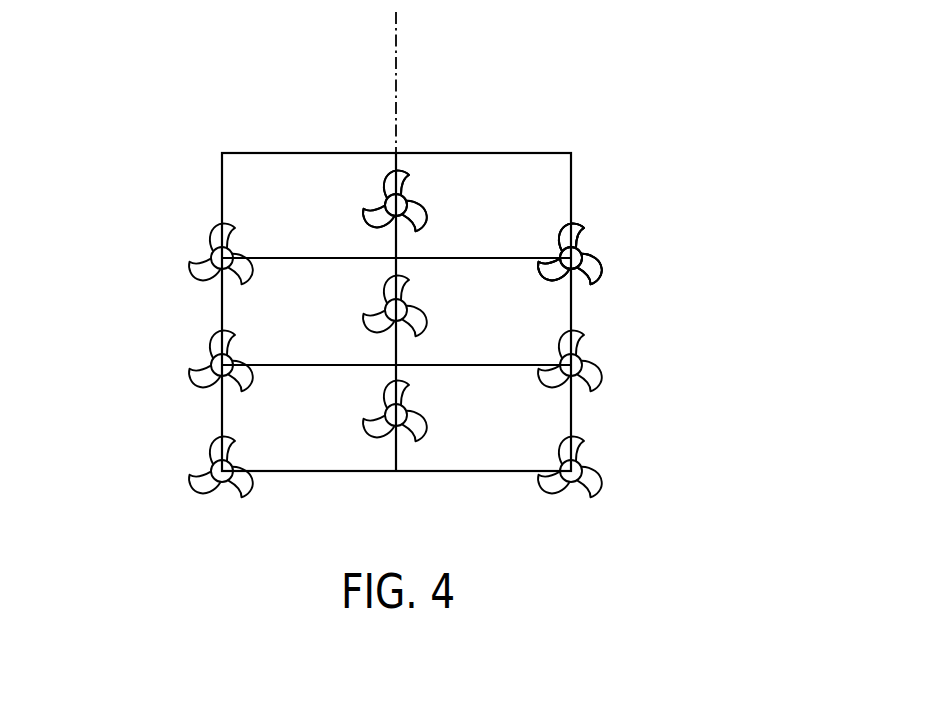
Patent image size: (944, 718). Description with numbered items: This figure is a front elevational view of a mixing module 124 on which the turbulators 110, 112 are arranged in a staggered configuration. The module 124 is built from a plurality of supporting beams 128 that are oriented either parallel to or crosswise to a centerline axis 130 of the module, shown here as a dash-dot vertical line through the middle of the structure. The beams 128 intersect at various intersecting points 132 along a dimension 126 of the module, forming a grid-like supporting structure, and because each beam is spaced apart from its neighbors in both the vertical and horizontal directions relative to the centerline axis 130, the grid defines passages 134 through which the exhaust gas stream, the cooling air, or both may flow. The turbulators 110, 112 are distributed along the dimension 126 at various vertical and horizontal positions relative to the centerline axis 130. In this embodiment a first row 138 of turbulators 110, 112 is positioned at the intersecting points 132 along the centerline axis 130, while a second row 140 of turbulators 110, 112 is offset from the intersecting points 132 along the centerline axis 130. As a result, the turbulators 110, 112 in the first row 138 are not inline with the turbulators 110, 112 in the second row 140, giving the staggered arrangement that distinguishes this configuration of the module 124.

The turbulator 110 is at (578, 248).
The turbulator 112 is at (571, 255).
The mixing module 124 is at (670, 97).
The dimension 126 is at (571, 526).
The supporting beam 128 is at (250, 153).
The centerline axis 130 is at (397, 82).
The intersecting point 132 is at (405, 250).
The passage 134 is at (320, 218).
The first row 138 is at (210, 503).
The second row 140 is at (411, 142).